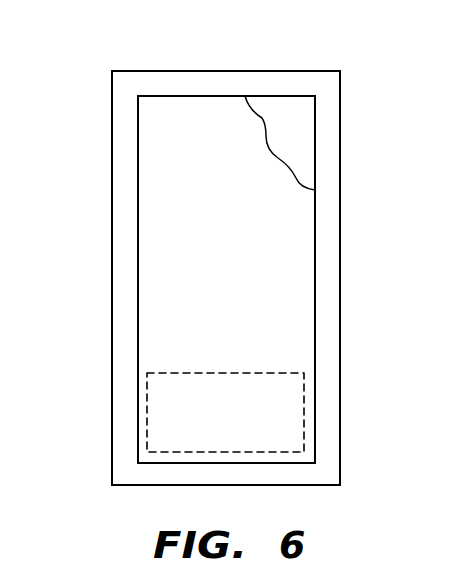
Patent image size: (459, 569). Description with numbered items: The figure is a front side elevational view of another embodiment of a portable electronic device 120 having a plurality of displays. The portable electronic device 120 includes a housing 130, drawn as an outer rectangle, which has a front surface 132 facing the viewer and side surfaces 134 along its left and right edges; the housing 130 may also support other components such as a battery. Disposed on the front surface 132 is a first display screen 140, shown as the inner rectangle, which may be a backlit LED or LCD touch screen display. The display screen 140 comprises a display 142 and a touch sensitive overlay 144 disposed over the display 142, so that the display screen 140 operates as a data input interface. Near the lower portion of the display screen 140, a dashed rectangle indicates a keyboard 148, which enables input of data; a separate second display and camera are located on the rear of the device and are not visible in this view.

The portable electronic device 120 is at (107, 50).
The housing 130 is at (110, 216).
The front surface 132 is at (120, 260).
The side surfaces 134 is at (110, 372).
The first display screen 140 is at (280, 237).
The display 142 is at (303, 118).
The touch sensitive overlay 144 is at (153, 312).
The keyboard 148 is at (162, 424).